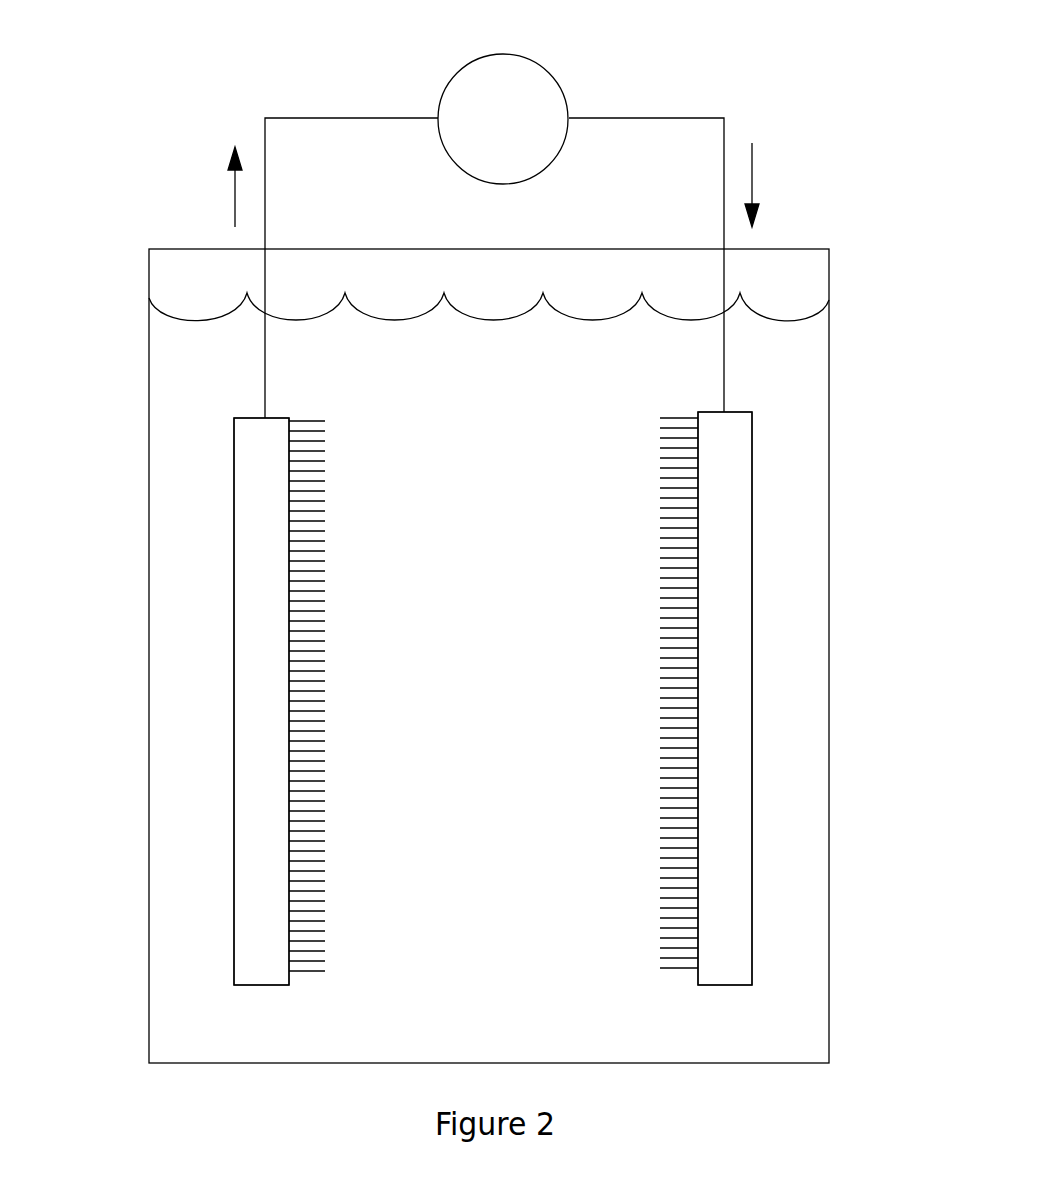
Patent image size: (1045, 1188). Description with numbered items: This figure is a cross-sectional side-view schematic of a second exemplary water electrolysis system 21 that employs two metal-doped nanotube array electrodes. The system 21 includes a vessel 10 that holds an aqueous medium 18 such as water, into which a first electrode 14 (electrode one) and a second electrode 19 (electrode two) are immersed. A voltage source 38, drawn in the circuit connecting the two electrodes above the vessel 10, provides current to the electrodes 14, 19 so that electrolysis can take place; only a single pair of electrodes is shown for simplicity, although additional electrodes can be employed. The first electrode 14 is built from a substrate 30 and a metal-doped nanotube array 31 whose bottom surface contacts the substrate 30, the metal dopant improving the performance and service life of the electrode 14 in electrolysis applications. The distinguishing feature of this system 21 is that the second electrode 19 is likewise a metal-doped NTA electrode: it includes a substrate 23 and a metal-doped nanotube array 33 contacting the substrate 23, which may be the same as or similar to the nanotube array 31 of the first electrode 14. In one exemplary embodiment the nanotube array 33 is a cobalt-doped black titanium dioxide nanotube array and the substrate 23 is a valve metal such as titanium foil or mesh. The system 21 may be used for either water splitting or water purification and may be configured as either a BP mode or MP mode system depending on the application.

The water electrolysis system 21 is at (803, 106).
The voltage source 38 is at (442, 102).
The vessel 10 is at (805, 249).
The aqueous medium 18 is at (805, 835).
The first electrode 14 is at (233, 520).
The substrate 30 is at (258, 455).
The metal-doped nanotube array 31 is at (306, 792).
The second electrode 19 is at (752, 523).
The substrate 23 is at (723, 470).
The metal-doped nanotube array 33 is at (683, 700).